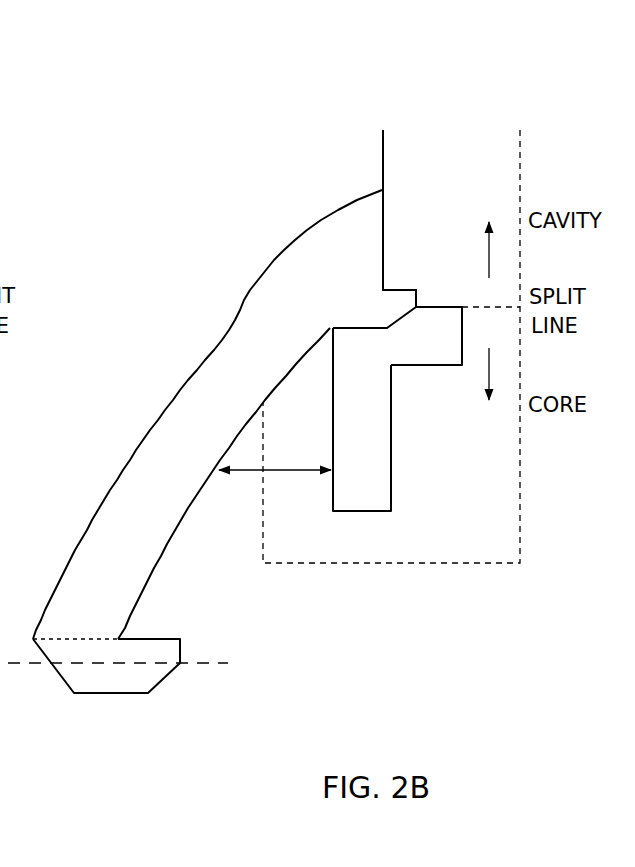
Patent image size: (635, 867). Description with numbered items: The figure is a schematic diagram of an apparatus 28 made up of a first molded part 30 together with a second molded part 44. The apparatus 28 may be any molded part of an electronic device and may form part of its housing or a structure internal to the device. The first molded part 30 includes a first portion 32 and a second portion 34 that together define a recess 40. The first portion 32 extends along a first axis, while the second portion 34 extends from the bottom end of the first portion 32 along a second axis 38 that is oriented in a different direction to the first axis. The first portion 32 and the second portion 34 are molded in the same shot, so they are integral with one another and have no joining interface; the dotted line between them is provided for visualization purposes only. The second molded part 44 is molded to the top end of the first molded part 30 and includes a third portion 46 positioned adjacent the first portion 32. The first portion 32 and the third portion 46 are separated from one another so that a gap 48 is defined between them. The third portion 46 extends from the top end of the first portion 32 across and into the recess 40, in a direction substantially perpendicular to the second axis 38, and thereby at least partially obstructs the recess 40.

The apparatus 28 is at (451, 88).
The first molded part 30 is at (195, 474).
The first portion 32 is at (207, 388).
The second portion 34 is at (117, 685).
The second axis 38 is at (209, 665).
The recess 40 is at (224, 483).
The second molded part 44 is at (411, 417).
The third portion 46 is at (377, 433).
The gap 48 is at (288, 468).